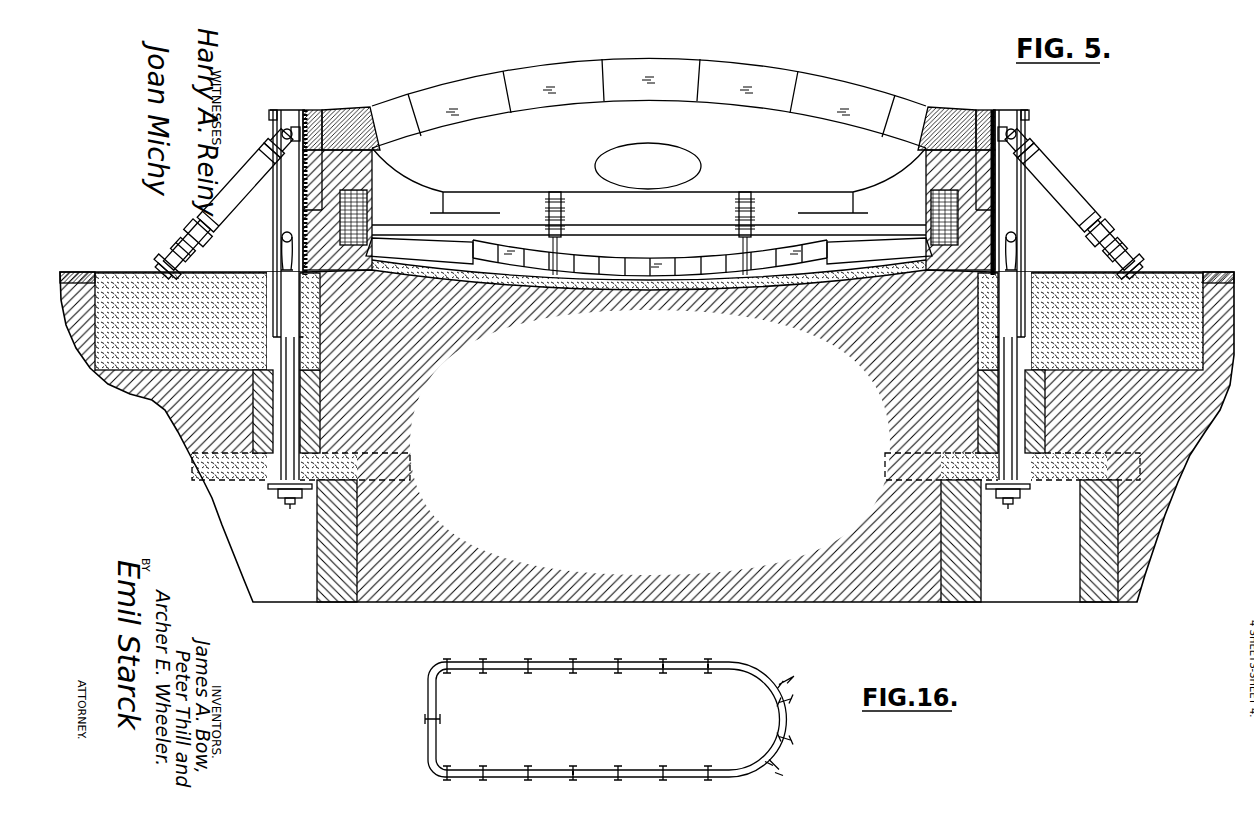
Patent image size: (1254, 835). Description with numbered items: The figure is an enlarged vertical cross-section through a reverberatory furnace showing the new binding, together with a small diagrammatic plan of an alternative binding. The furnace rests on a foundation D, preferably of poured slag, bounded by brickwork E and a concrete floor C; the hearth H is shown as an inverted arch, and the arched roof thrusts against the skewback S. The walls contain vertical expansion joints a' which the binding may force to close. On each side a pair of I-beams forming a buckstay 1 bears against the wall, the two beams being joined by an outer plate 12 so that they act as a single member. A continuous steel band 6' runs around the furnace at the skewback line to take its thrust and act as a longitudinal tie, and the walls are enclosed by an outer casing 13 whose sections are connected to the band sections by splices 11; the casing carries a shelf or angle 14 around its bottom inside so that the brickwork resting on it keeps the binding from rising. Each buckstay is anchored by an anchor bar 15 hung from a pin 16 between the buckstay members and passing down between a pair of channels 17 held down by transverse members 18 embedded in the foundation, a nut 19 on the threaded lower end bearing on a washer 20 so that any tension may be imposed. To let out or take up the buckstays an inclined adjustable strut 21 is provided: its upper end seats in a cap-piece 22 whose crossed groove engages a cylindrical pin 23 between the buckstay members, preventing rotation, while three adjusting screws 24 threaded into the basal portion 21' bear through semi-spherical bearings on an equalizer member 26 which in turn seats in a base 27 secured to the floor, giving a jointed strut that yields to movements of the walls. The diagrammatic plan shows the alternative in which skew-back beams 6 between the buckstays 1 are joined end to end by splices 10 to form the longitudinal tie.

In FIG. 5, the buckstay 1 is at (283, 203).
In FIG. 16, the buckstay 1 is at (663, 662).
In FIG. 5, the skew-back supporting band 6' is at (652, 111).
In FIG. 16, the skew-back beam 6 is at (607, 719).
In FIG. 16, the splice 10 is at (528, 674).
In FIG. 5, the splice 11 is at (322, 112).
In FIG. 5, the outer plate 12 is at (272, 112).
In FIG. 5, the outer casing 13 is at (303, 222).
In FIG. 5, the shelf or angle 14 is at (303, 268).
In FIG. 5, the anchor bar 15 is at (268, 484).
In FIG. 5, the pin 16 is at (283, 237).
In FIG. 5, the channel 17 is at (276, 492).
In FIG. 5, the transverse member 18 is at (410, 462).
In FIG. 5, the nut 19 is at (290, 508).
In FIG. 5, the washer 20 is at (285, 502).
In FIG. 5, the adjustable strut 21 is at (650, 187).
In FIG. 5, the basal portion of strut 21' is at (661, 229).
In FIG. 5, the cap-piece 22 is at (280, 146).
In FIG. 5, the cylindrical pin 23 is at (283, 132).
In FIG. 5, the adjusting screw 24 is at (192, 238).
In FIG. 5, the equalizer member 26 is at (180, 252).
In FIG. 5, the base 27 is at (170, 267).
In FIG. 5, the skewback S is at (345, 115).
In FIG. 5, the concrete floor C is at (102, 272).
In FIG. 5, the foundation D is at (480, 546).
In FIG. 5, the brickwork E is at (338, 602).
In FIG. 5, the hearth H is at (672, 282).
In FIG. 5, the vertical expansion joint a' is at (652, 233).